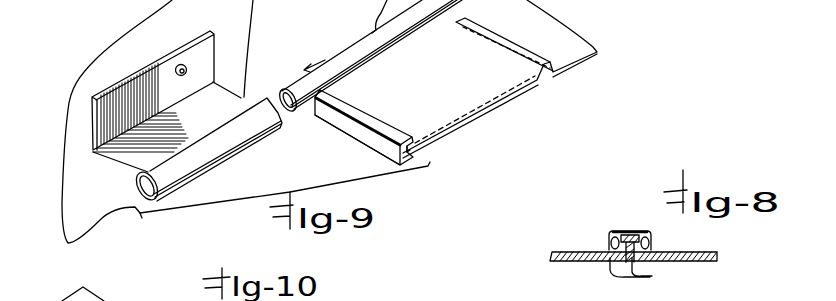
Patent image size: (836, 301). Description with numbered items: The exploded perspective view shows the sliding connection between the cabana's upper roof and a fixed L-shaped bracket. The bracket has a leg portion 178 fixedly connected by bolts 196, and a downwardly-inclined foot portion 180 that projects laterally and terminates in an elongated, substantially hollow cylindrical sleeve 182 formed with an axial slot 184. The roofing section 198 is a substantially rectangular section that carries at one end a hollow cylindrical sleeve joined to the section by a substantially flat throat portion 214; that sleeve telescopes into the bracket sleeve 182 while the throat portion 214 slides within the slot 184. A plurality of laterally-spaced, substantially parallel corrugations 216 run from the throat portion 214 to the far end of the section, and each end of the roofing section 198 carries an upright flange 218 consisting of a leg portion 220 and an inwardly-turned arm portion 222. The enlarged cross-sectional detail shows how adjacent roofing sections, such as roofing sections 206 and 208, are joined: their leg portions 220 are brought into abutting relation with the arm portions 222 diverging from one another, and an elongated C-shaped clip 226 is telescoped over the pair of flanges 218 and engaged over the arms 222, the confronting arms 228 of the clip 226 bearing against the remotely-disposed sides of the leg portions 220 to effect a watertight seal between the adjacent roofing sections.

In FIG. 9, the leg portion 178 is at (97, 127).
In FIG. 9, the foot portion 180 is at (124, 167).
In FIG. 9, the cylindrical sleeve 182 is at (263, 97).
In FIG. 9, the slot 184 is at (245, 148).
In FIG. 9, the bolts 196 is at (183, 65).
In FIG. 9, the roofing section 198 is at (473, 117).
In FIG. 9, the throat portion 214 is at (315, 115).
In FIG. 9, the corrugations 216 is at (513, 60).
In FIG. 9, the upright flange 218 is at (370, 121).
In FIG. 9, the arm portion 222 is at (397, 130).
In FIG. 8, the arm portion 222 is at (643, 231).
In FIG. 9, the C-shaped clip 226 is at (400, 150).
In FIG. 8, the C-shaped clip 226 is at (625, 231).
In FIG. 8, the roofing section 206 is at (580, 251).
In FIG. 8, the roofing section 208 is at (705, 252).
In FIG. 8, the leg portion 220 is at (648, 271).
In FIG. 8, the confronting arms 228 is at (609, 232).